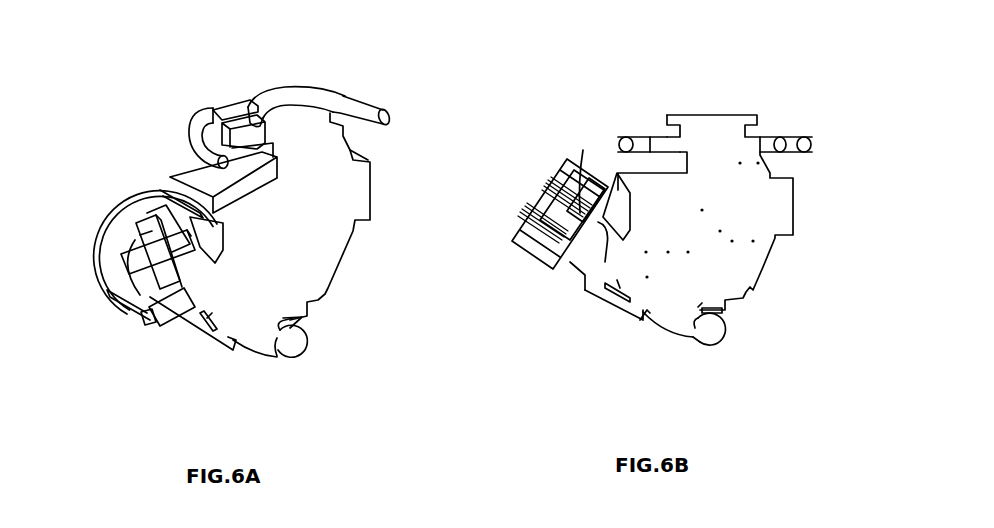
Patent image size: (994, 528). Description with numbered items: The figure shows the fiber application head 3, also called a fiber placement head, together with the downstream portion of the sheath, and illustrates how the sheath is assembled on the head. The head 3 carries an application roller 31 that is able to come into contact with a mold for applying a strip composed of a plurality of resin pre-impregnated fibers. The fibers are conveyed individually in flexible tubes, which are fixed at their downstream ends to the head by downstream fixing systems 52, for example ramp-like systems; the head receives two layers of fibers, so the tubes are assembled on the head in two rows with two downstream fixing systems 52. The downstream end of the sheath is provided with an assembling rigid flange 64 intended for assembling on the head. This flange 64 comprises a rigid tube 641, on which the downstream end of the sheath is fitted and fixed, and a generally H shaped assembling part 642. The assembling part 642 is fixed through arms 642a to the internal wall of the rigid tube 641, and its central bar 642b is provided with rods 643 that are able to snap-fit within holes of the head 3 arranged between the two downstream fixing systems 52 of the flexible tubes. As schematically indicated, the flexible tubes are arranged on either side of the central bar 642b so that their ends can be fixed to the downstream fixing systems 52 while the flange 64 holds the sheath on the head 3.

In FIG. 6A, the fiber application head 3 is at (348, 247).
In FIG. 6B, the fiber application head 3 is at (767, 270).
In FIG. 6A, the application roller 31 is at (286, 360).
In FIG. 6B, the application roller 31 is at (708, 345).
In FIG. 6A, the downstream fixing system 52 is at (141, 314).
In FIG. 6B, the downstream fixing system 52 is at (605, 262).
In FIG. 6A, the assembling rigid flange 64 is at (126, 250).
In FIG. 6B, the assembling rigid flange 64 is at (550, 237).
In FIG. 6A, the rigid tube 641 is at (93, 256).
In FIG. 6B, the rigid tube 641 is at (525, 253).
In FIG. 6A, the assembling part 642 is at (130, 243).
In FIG. 6B, the assembling part 642 is at (553, 245).
In FIG. 6A, the arms 642a is at (147, 213).
In FIG. 6A, the central bar 642b is at (150, 256).
In FIG. 6B, the central bar 642b is at (590, 150).
In FIG. 6B, the rods 643 is at (580, 253).